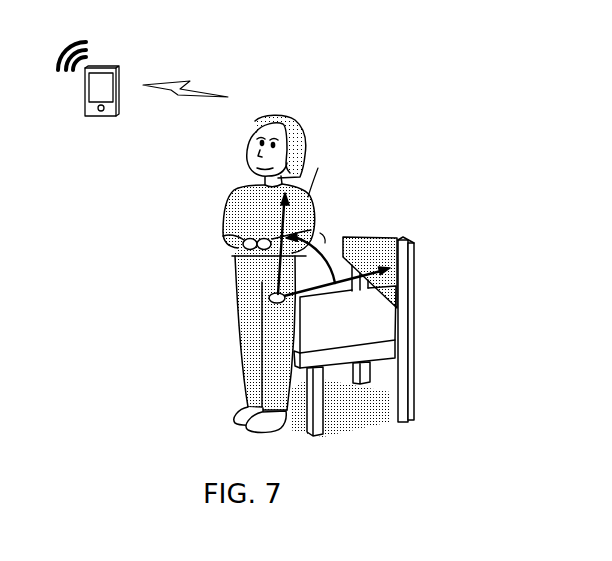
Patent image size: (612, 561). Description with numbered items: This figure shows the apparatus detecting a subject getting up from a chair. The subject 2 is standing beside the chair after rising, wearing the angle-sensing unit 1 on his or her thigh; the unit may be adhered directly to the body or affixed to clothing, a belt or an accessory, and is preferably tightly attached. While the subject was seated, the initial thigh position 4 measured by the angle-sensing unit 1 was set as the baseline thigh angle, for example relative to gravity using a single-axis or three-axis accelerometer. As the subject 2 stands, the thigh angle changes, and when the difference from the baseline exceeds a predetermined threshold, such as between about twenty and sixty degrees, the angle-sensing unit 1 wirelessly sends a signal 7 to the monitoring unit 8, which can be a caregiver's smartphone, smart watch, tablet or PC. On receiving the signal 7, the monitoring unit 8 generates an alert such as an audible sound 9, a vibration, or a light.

The angle-sensing unit 1 is at (270, 297).
The subject 2 is at (222, 200).
The initial thigh position 4 is at (392, 282).
The wireless signal 7 is at (180, 82).
The monitoring unit 8 is at (80, 93).
The audible sound 9 is at (58, 58).